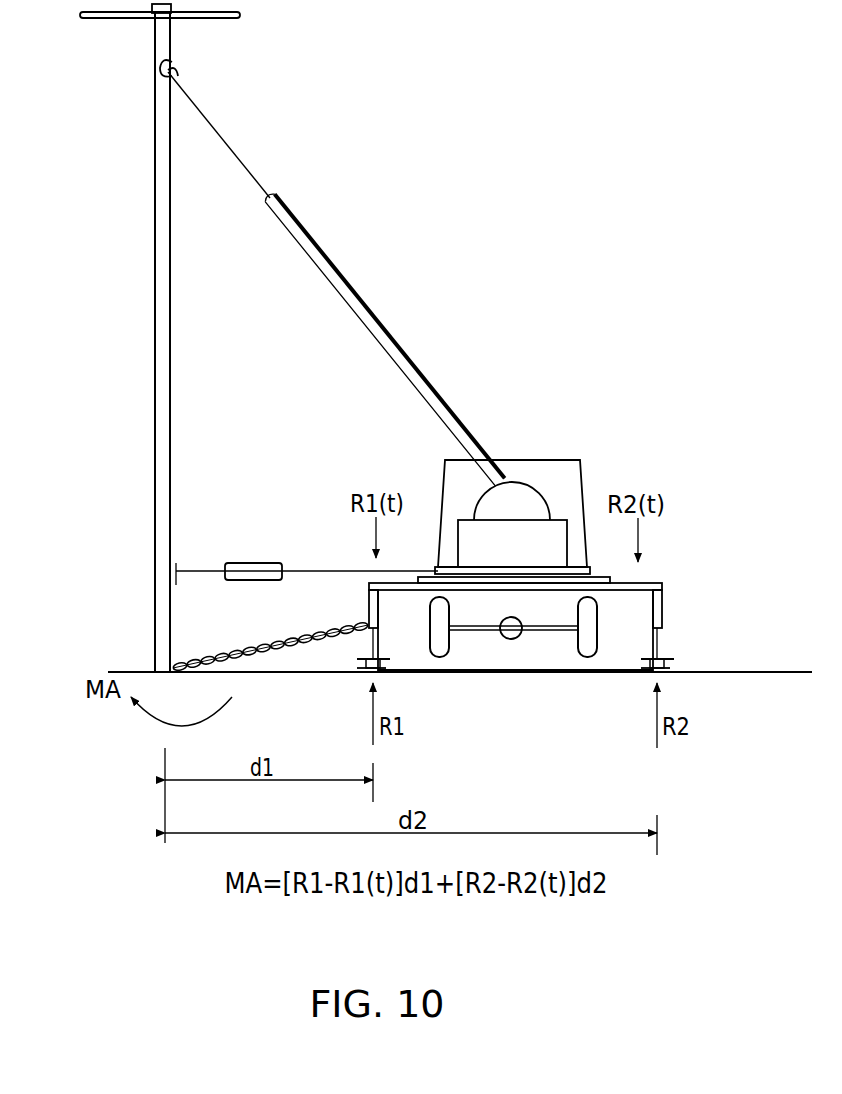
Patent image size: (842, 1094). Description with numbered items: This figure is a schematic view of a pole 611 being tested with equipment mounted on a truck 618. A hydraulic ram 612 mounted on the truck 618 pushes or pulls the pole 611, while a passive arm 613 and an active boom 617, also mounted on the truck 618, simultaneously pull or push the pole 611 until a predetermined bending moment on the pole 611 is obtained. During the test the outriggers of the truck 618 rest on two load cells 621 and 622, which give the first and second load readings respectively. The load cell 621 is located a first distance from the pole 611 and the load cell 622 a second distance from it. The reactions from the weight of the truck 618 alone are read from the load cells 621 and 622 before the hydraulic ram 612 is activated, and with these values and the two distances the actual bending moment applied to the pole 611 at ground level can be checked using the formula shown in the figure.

The pole 611 is at (157, 318).
The hydraulic ram 612 is at (257, 563).
The passive arm 613 is at (242, 647).
The active boom 617 is at (365, 312).
The truck 618 is at (572, 480).
The load cell 621 is at (388, 665).
The load cell 622 is at (672, 665).